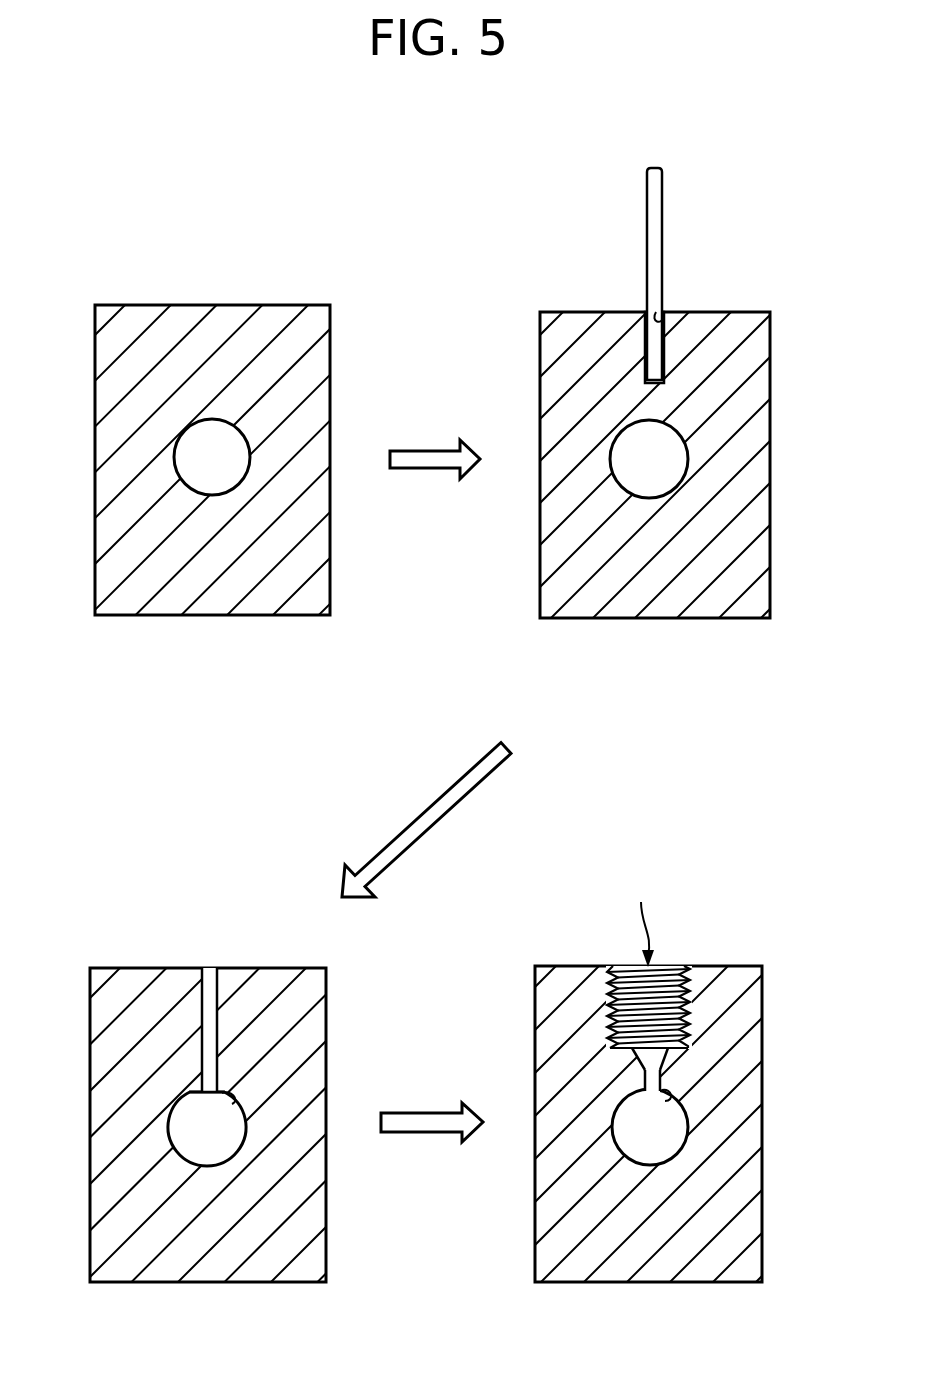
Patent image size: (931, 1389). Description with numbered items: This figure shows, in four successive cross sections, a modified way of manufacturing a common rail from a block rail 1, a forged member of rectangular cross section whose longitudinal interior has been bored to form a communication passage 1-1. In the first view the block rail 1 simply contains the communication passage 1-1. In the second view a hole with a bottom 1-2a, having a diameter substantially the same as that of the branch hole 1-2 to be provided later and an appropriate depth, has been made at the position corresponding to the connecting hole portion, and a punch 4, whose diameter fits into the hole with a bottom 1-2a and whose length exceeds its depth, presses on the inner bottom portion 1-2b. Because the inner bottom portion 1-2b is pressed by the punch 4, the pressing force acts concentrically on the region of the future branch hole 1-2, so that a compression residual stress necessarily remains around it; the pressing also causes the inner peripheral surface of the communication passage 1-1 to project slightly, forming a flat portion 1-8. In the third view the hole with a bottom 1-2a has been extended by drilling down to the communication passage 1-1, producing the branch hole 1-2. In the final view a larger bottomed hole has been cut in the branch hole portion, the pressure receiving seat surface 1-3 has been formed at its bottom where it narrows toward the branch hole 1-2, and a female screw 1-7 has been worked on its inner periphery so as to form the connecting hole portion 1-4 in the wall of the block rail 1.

The block rail 1 is at (318, 357).
The communication passage 1-1 is at (245, 465).
The branch hole 1-2 is at (217, 982).
The hole with a bottom 1-2a is at (664, 316).
The inner bottom portion 1-2b is at (655, 372).
The punch 4 is at (658, 224).
The flat portion 1-8 is at (232, 1104).
The connecting hole portion 1-4 is at (668, 897).
The female screw 1-7 is at (672, 972).
The pressure receiving seat surface 1-3 is at (660, 1060).